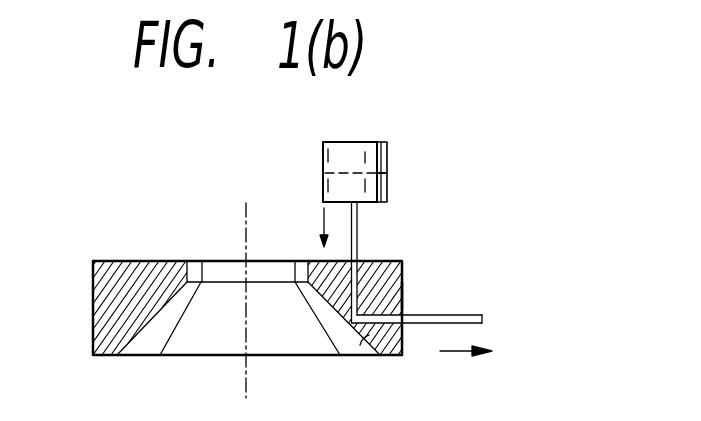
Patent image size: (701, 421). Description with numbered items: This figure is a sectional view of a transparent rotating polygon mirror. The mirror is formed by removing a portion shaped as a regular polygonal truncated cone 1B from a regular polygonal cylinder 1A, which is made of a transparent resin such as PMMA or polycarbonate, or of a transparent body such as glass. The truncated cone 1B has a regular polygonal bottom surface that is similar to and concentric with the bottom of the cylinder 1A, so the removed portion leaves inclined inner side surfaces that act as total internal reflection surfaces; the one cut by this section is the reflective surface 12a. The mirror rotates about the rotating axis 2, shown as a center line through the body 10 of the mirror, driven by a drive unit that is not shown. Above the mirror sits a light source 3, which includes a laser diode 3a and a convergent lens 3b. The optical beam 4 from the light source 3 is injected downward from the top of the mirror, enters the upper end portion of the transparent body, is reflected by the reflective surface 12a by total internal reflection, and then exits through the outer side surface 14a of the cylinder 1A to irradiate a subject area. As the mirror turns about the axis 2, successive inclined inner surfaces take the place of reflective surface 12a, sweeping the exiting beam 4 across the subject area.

The regular polygonal cylinder 1A is at (122, 261).
The regular polygonal truncated cone 1B is at (190, 345).
The rotating axis 2 is at (246, 216).
The light source 3 is at (365, 142).
The laser diode 3a is at (388, 155).
The convergent lens 3b is at (388, 187).
The optical beam 4 is at (357, 228).
The chuck body 10 is at (385, 261).
The reflective surface 12a is at (360, 343).
The outer side surface 14a is at (402, 296).